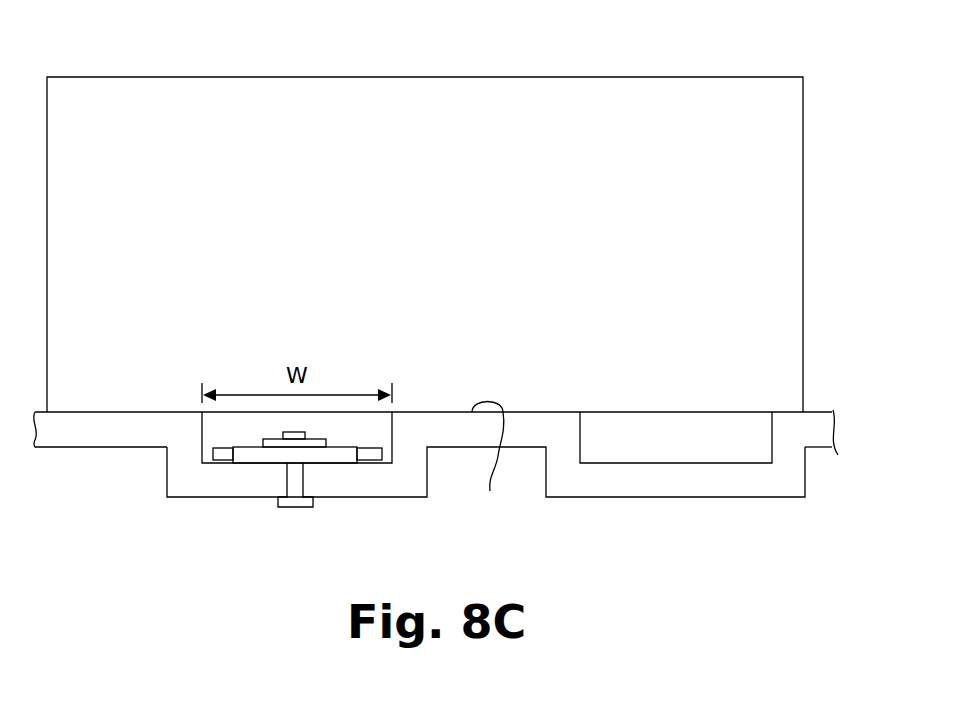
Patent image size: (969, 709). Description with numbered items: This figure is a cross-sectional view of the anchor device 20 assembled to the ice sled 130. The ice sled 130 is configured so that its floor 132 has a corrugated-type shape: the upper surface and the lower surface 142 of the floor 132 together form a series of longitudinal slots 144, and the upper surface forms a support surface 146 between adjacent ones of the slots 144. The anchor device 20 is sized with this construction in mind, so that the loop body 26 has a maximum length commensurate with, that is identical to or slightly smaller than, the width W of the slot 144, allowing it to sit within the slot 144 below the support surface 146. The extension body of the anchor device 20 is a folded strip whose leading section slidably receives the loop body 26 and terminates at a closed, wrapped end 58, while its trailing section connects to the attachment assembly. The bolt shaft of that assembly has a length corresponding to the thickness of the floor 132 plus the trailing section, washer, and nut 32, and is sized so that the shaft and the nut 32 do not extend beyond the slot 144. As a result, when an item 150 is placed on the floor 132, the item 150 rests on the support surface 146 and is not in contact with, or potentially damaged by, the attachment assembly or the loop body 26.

The item 150 is at (448, 93).
The floor 132 is at (127, 430).
The lower surface 142 is at (630, 498).
The ice sled 130 is at (143, 518).
The longitudinal slot 144 is at (198, 438).
The support surface 146 is at (90, 412).
The anchor device 20 is at (354, 487).
The loop body 26 is at (393, 477).
The nut 32 is at (300, 432).
The wrapped end 58 is at (296, 508).